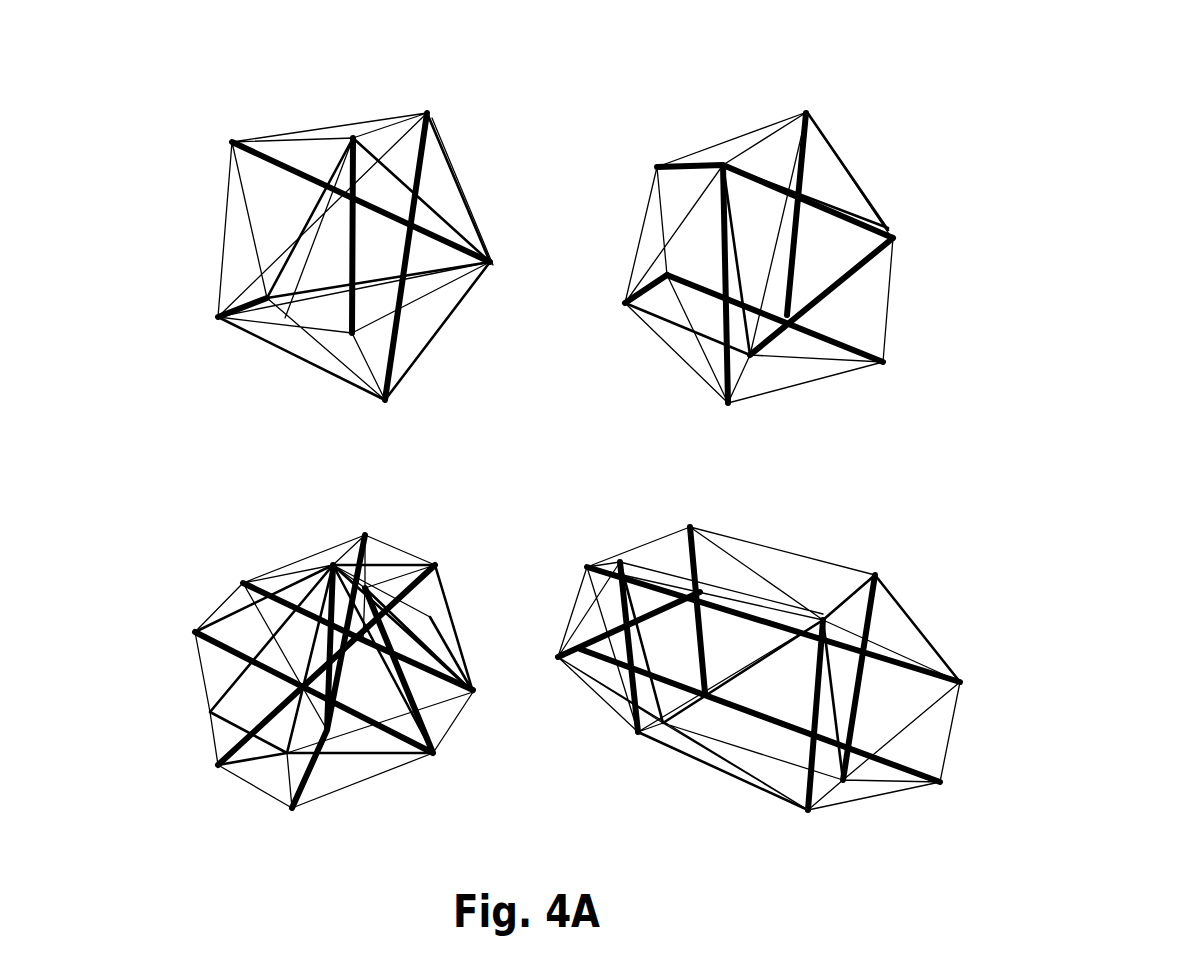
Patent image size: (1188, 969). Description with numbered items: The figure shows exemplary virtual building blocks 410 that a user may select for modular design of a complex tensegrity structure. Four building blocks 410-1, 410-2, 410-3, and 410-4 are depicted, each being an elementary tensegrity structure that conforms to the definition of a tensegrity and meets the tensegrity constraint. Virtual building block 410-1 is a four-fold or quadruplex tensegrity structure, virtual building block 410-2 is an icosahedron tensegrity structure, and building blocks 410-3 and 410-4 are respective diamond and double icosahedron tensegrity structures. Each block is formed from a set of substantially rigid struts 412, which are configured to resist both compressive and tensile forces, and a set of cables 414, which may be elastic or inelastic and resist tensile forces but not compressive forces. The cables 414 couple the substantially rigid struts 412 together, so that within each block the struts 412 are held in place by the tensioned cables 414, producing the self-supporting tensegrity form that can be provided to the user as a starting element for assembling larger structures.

The virtual building blocks 410 is at (1104, 108).
The virtual building block 410-1 is at (196, 177).
The virtual building block 410-2 is at (937, 247).
The virtual building block 410-3 is at (148, 589).
The virtual building block 410-4 is at (960, 614).
The substantially rigid struts 412 is at (283, 171).
The cables 414 is at (306, 366).